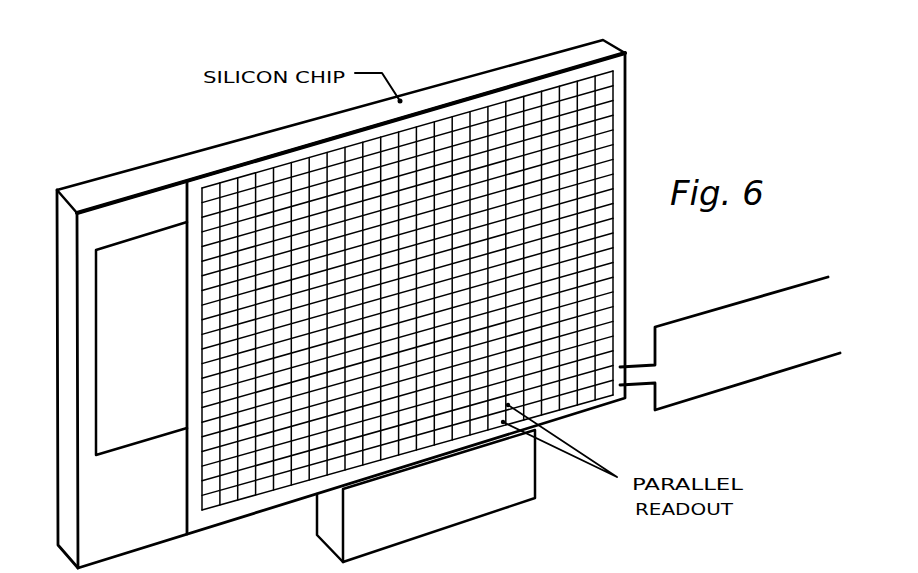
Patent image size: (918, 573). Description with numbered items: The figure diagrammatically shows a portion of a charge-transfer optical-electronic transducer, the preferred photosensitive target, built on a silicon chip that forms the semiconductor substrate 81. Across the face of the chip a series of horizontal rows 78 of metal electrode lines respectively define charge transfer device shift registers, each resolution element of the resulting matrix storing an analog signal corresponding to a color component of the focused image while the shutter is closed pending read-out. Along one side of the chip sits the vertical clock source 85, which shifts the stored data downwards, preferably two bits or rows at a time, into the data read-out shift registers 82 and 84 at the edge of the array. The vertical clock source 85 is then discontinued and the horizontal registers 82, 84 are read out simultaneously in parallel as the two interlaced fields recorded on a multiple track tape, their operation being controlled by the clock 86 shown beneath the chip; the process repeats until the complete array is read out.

The horizontal rows 78 is at (613, 88).
The semiconductor substrate 81 is at (592, 48).
The data read-out shift register 82 is at (642, 366).
The data read-out shift register 84 is at (640, 385).
The vertical clock source 85 is at (107, 436).
The clock 86 is at (455, 513).